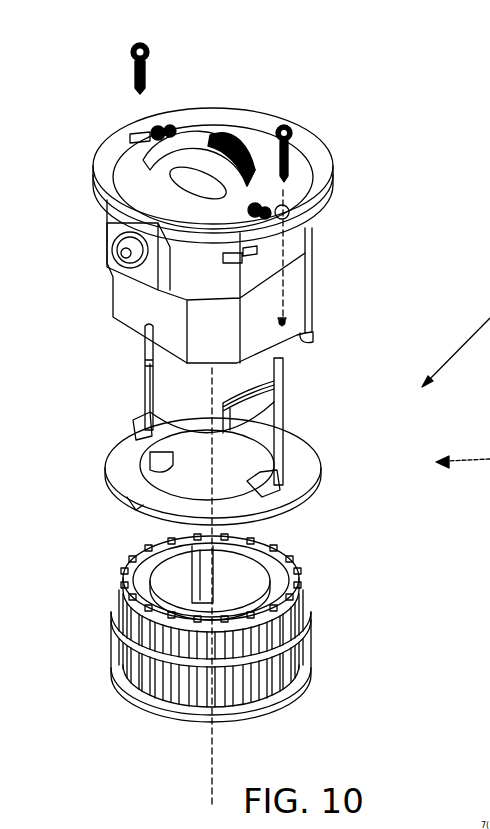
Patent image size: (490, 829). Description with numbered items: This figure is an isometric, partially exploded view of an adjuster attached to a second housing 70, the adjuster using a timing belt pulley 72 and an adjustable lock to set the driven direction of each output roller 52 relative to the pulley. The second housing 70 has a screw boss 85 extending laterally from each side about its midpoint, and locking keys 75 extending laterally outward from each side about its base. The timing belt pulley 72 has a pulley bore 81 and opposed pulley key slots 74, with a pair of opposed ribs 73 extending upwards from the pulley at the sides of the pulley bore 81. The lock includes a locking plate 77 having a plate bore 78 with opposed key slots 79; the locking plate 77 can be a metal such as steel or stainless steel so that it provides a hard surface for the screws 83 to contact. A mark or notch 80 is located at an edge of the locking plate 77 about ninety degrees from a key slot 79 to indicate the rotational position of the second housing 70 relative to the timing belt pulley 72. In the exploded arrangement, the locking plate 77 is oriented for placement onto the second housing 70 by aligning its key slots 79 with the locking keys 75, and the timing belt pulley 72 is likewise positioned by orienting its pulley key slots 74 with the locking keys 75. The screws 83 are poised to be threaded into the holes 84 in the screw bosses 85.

The output roller 52 is at (208, 155).
The second housing 70 is at (326, 210).
The timing belt pulley 72 is at (302, 688).
The ribs 73 is at (256, 546).
The pulley key slots 74 is at (172, 562).
The locking keys 75 is at (147, 376).
The locking plate 77 is at (296, 455).
The plate bore 78 is at (172, 466).
The key slots 79 is at (145, 425).
The notch 80 is at (134, 506).
The pulley bore 81 is at (254, 582).
The screws 83 is at (152, 68).
The holes 84 is at (284, 318).
The screw boss 85 is at (306, 343).